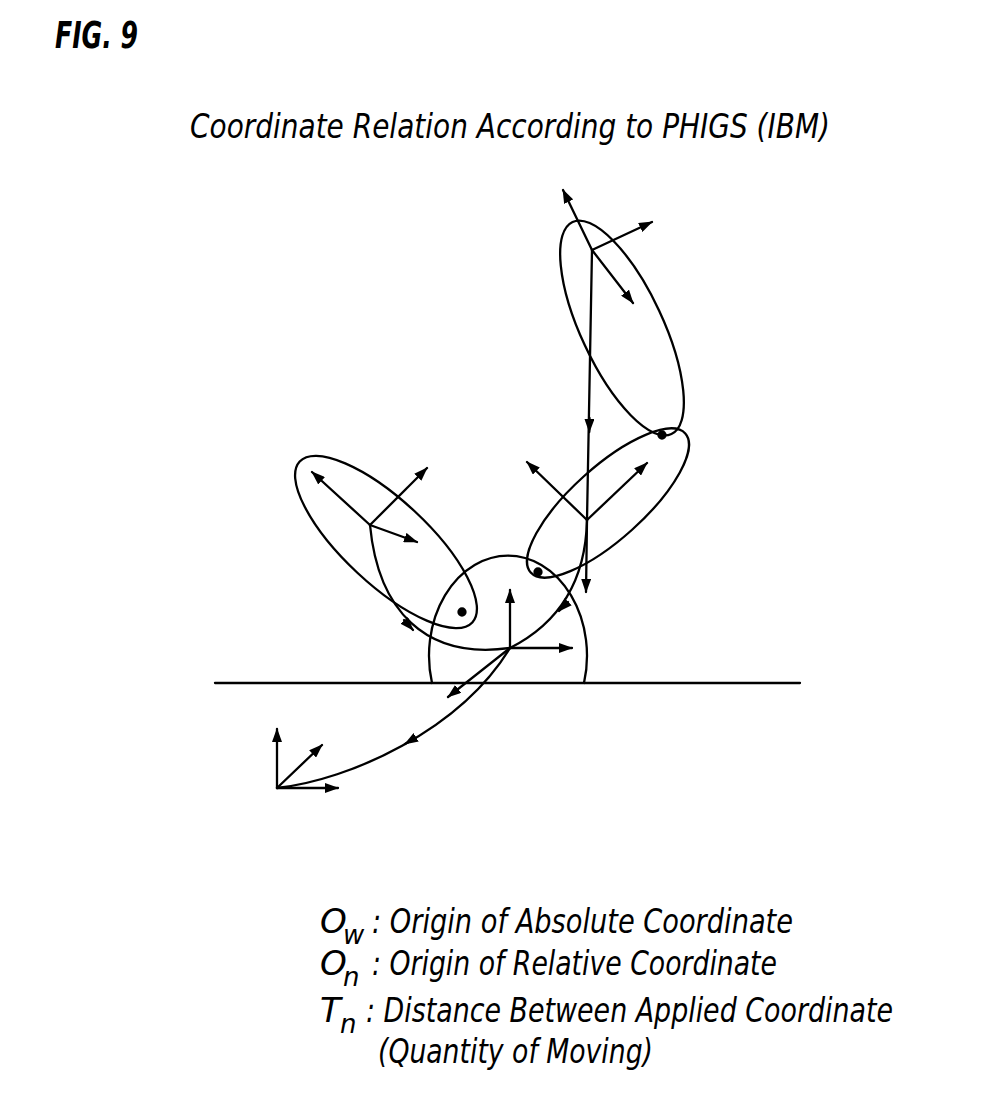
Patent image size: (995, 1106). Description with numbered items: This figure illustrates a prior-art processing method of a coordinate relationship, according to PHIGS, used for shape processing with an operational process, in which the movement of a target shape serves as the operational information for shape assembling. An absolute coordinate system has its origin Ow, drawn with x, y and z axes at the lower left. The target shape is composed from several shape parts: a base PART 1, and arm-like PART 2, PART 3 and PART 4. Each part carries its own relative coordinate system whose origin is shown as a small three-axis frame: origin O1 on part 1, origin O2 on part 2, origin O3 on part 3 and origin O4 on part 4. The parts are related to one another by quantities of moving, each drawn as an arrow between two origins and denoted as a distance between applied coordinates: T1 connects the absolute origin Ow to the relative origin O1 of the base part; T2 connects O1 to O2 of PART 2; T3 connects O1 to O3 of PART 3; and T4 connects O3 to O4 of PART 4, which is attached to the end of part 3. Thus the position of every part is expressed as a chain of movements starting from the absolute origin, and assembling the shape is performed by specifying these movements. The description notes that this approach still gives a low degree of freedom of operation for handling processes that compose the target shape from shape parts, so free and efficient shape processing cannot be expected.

The part 1 is at (583, 637).
The part 2 is at (295, 473).
The part 3 is at (670, 503).
The part 4 is at (657, 293).
The origin of relative coordinate O1 is at (520, 660).
The origin of relative coordinate O2 is at (340, 540).
The origin of relative coordinate O3 is at (590, 527).
The origin of relative coordinate O4 is at (600, 223).
The origin of absolute coordinate Ow is at (302, 765).
The distance between applied coordinates T1 is at (393, 718).
The distance between applied coordinates T2 is at (437, 595).
The distance between applied coordinates T3 is at (572, 596).
The distance between applied coordinates T4 is at (570, 385).